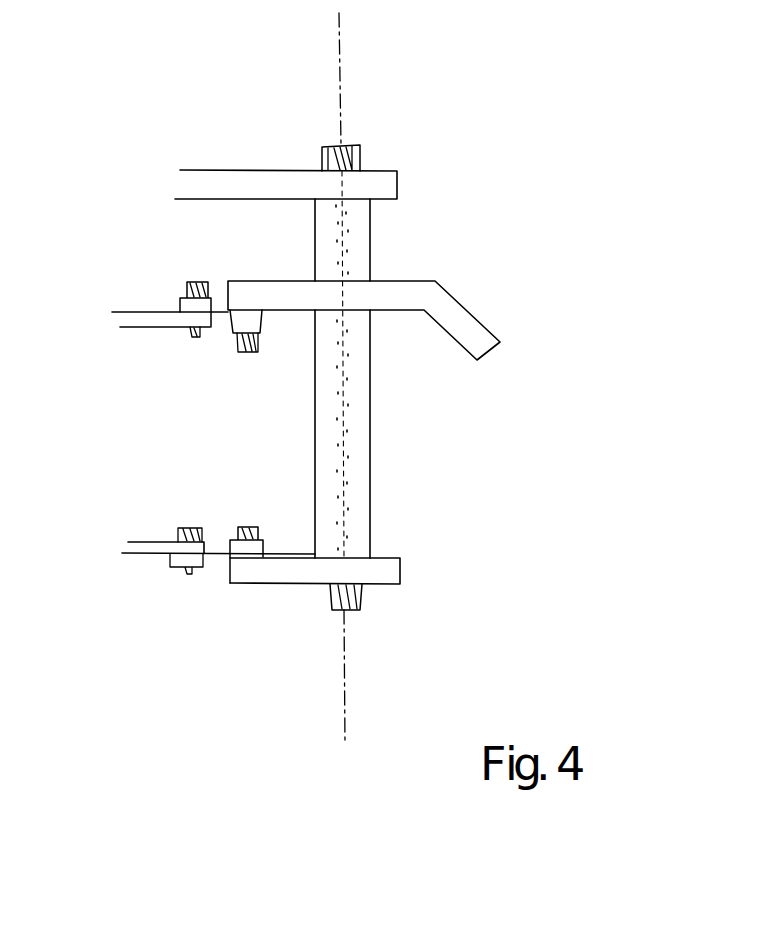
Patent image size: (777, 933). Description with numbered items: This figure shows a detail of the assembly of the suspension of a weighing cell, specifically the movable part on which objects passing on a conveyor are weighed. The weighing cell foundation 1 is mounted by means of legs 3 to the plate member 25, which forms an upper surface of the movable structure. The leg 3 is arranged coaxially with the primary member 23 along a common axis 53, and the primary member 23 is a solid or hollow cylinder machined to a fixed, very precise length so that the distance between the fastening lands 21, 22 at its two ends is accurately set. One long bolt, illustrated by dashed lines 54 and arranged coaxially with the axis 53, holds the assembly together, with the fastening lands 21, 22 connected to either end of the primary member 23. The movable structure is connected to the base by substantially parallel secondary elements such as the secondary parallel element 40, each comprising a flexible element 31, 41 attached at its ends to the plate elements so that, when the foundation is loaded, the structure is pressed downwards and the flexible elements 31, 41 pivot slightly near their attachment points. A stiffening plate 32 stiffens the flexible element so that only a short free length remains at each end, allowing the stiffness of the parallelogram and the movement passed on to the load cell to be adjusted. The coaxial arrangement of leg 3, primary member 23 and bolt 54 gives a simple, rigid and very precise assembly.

The weighing cell foundation 1 is at (237, 168).
The leg 3 is at (372, 242).
The lower surface / fastening land 21 is at (384, 576).
The upper surface / fastening land 22 is at (432, 292).
The primary element 23 is at (378, 470).
The plate element 25 is at (268, 281).
The flexible element 31 is at (220, 558).
The stiffening plate 32 is at (132, 563).
The secondary parallel element 40 is at (135, 307).
The flexible element 41 is at (216, 303).
The axis 53 is at (352, 74).
The long bolt 54 is at (342, 415).